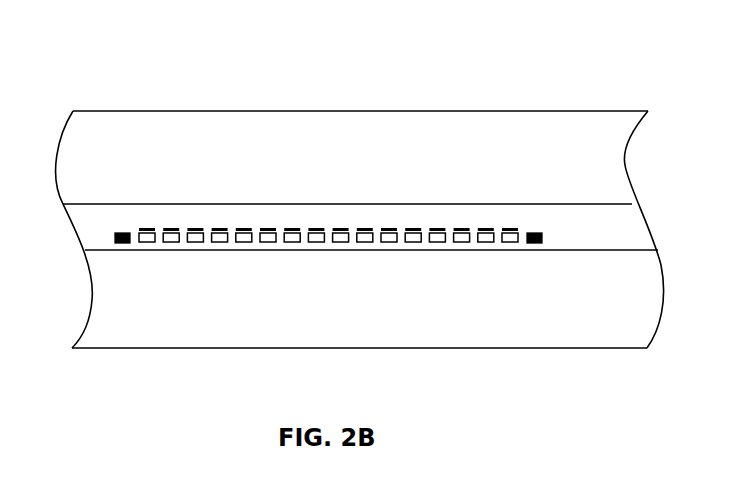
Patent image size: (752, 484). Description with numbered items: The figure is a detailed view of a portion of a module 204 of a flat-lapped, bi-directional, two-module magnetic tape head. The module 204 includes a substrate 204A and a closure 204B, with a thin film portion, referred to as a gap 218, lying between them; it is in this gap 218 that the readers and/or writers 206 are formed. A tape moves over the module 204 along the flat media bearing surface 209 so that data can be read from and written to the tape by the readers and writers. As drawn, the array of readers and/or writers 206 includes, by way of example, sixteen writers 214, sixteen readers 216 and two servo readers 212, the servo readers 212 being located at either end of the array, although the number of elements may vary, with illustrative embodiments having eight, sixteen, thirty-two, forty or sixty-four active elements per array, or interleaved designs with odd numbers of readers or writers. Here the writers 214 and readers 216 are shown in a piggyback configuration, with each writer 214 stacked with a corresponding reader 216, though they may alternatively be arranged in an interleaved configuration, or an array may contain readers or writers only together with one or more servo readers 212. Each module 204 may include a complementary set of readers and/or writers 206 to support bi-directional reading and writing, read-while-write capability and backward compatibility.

The module 204 is at (86, 90).
The substrate 204A is at (170, 111).
The closure 204B is at (218, 348).
The media bearing surface 209 is at (292, 173).
The servo readers 212 is at (115, 238).
The writers 214 is at (438, 228).
The readers 216 is at (437, 243).
The readers and/or writers 206 is at (566, 226).
The gap 218 is at (648, 228).